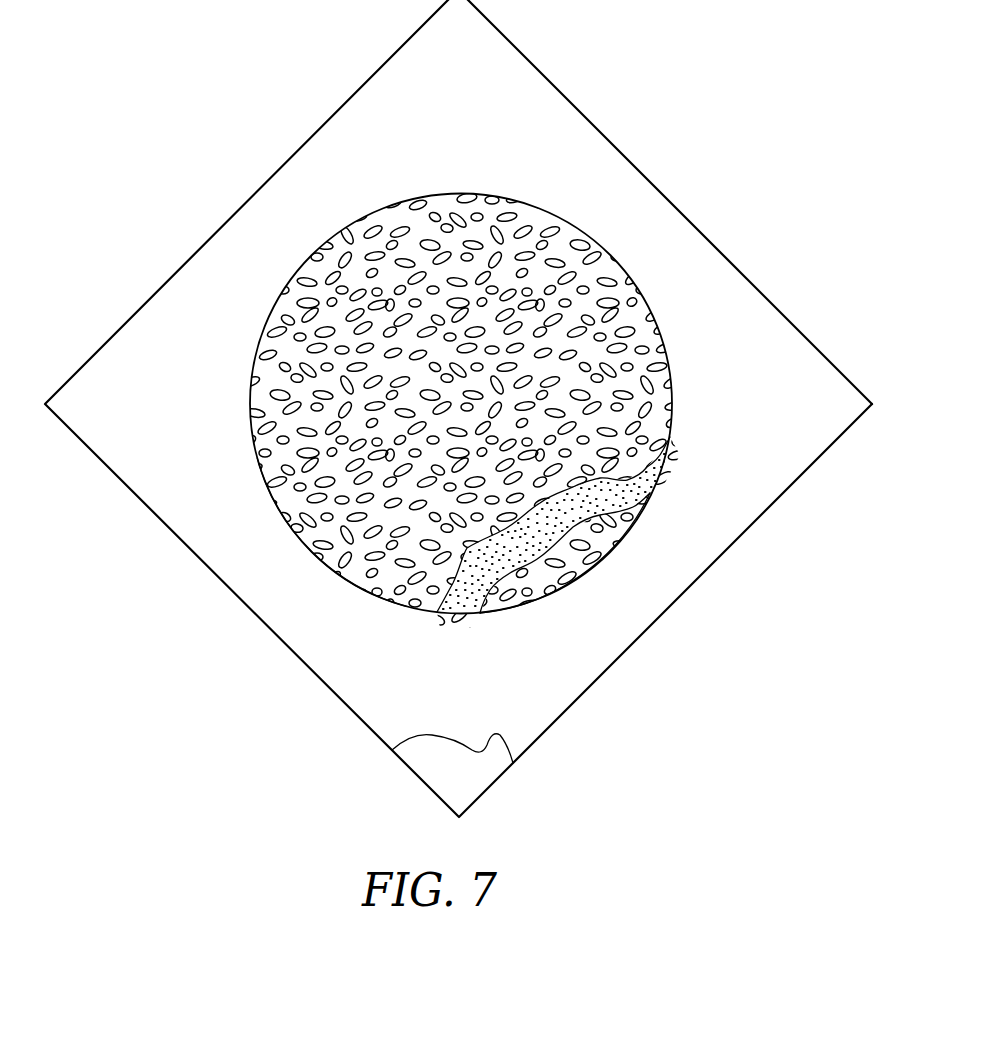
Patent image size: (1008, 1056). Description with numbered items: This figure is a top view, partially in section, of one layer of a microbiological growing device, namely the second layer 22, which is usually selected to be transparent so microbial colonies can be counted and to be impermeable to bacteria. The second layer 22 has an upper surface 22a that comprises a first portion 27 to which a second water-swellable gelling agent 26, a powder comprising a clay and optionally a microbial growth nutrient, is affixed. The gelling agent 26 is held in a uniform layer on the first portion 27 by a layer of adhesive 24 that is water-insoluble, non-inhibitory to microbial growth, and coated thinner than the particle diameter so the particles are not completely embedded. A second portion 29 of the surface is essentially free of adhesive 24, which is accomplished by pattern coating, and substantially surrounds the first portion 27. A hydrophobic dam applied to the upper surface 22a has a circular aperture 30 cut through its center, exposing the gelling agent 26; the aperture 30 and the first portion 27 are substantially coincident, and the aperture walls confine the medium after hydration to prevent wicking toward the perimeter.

The second layer 22 is at (746, 87).
The upper surface 22a is at (473, 787).
The second portion 29 is at (610, 165).
The second water-swellable gelling agent 26 is at (645, 338).
The circular aperture 30 is at (320, 560).
The layer of adhesive 24 is at (627, 495).
The first portion 27 is at (557, 577).